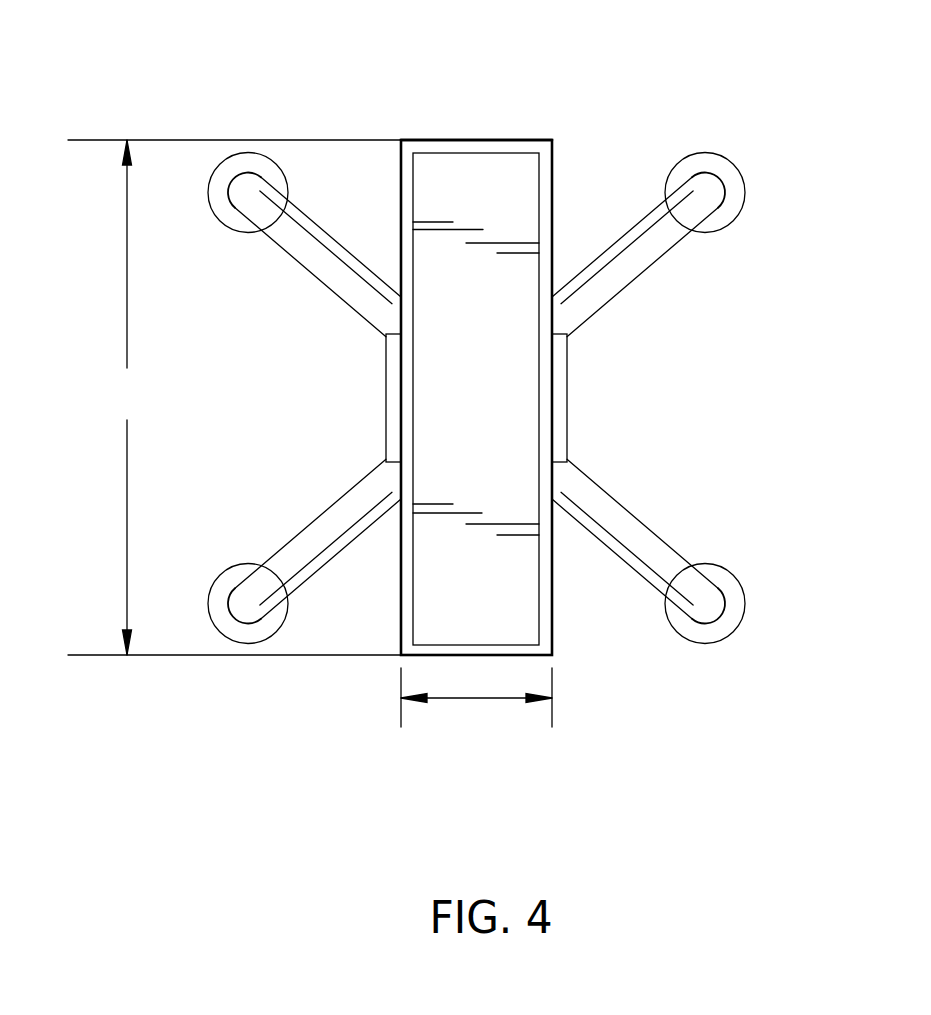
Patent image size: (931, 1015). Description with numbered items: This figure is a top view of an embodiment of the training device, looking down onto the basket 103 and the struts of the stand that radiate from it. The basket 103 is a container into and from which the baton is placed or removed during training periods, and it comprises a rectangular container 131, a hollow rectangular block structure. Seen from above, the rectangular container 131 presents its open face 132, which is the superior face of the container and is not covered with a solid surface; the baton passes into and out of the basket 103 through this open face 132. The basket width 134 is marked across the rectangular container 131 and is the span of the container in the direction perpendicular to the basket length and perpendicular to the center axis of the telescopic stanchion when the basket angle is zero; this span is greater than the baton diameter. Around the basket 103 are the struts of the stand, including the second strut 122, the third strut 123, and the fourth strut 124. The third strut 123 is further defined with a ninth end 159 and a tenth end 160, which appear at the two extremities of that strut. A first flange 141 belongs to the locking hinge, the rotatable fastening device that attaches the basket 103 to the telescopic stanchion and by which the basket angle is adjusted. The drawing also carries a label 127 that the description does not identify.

The basket 103 is at (450, 138).
The rectangular container 131 is at (500, 138).
The open face 132 is at (513, 205).
The upper left arm 127 is at (333, 240).
The second strut 122 is at (602, 254).
The third strut 123 is at (693, 551).
The fourth strut 124 is at (328, 560).
The ninth end 159 is at (551, 477).
The tenth end 160 is at (713, 602).
The first flange 141 is at (234, 397).
The basket width 134 is at (468, 698).